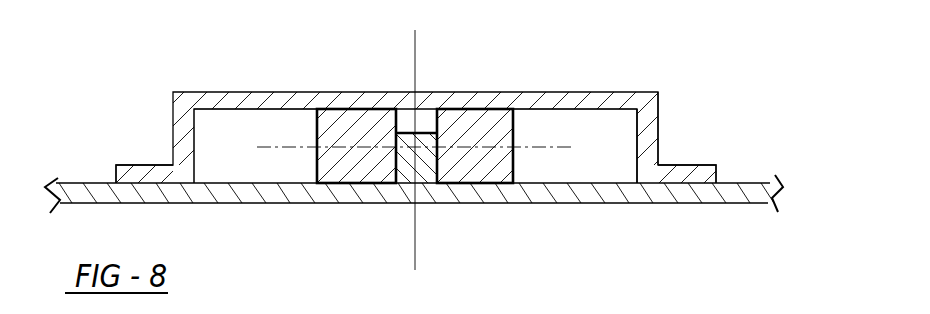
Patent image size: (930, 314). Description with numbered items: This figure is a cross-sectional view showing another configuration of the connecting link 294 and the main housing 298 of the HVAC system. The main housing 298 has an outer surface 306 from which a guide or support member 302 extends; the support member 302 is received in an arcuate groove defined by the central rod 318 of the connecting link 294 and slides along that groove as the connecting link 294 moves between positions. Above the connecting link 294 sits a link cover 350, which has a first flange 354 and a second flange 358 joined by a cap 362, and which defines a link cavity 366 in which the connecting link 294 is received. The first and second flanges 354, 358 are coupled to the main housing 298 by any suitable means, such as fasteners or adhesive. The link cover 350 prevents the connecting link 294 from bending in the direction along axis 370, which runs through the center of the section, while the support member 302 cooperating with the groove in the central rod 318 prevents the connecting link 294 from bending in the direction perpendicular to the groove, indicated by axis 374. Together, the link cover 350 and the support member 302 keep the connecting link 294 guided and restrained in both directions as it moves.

The connecting link 294 is at (495, 127).
The main housing 298 is at (698, 197).
The support member 302 is at (425, 167).
The outer surface 306 is at (748, 183).
The central rod 318 is at (317, 125).
The link cover 350 is at (260, 92).
The first flange 354 is at (143, 165).
The second flange 358 is at (692, 175).
The cap 362 is at (637, 100).
The link cavity 366 is at (232, 145).
The axis 370 is at (415, 55).
The axis 374 is at (550, 145).